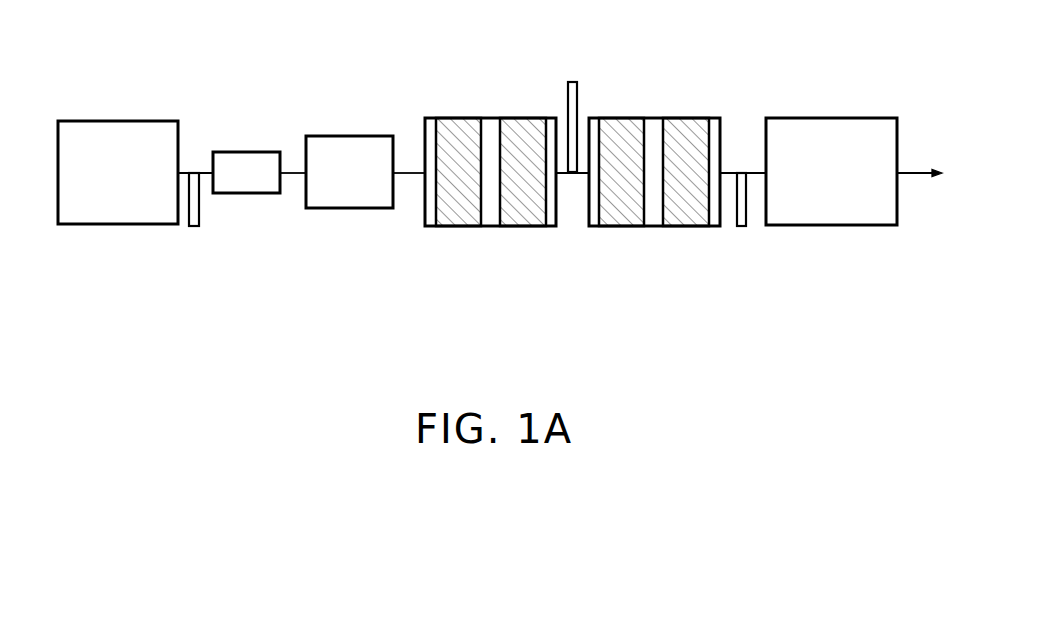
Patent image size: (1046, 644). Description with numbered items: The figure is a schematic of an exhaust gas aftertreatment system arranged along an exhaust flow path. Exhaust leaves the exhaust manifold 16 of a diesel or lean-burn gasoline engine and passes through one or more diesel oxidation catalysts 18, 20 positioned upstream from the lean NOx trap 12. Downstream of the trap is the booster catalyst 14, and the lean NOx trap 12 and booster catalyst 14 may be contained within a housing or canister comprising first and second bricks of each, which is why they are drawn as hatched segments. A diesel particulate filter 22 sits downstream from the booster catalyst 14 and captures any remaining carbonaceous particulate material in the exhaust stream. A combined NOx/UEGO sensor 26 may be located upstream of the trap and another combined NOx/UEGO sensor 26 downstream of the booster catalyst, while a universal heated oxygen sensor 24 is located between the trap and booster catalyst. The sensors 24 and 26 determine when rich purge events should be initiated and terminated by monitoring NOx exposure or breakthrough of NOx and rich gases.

The lean NOx trap 12 is at (461, 118).
The booster catalyst 14 is at (645, 118).
The exhaust manifold 16 is at (118, 121).
The diesel oxidation catalyst 18 is at (245, 152).
The diesel oxidation catalyst 20 is at (348, 136).
The diesel particulate filter 22 is at (829, 118).
The universal heated oxygen sensor 24 is at (578, 86).
The combined NOx/UEGO sensor 26 is at (466, 250).